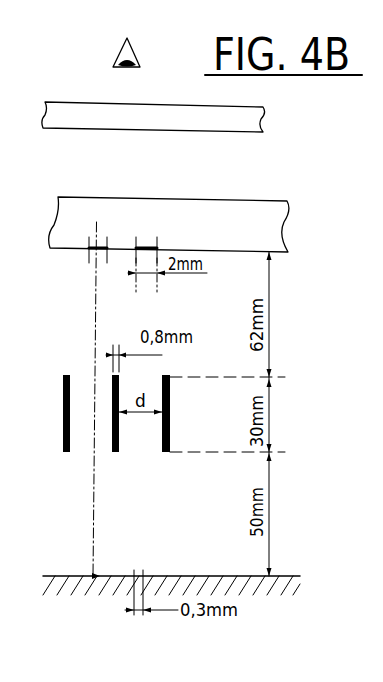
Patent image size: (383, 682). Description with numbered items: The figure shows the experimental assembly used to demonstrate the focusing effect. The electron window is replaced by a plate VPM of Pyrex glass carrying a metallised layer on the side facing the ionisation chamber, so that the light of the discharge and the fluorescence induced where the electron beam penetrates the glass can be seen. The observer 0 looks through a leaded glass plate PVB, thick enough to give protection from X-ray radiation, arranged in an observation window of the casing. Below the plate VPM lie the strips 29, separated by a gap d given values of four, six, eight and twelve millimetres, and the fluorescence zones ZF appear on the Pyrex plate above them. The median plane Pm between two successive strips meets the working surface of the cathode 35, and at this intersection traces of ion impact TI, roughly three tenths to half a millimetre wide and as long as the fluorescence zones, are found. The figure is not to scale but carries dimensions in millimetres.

The observer 0 is at (113, 56).
The leaded glass plate PVB is at (265, 118).
The plate of Pyrex glass VPM is at (203, 224).
The fluorescence zones ZF is at (106, 237).
The test bar 29 is at (63, 400).
The median plane Pm is at (96, 522).
The cathode 35 is at (57, 576).
The traces of ion impact TI is at (118, 590).